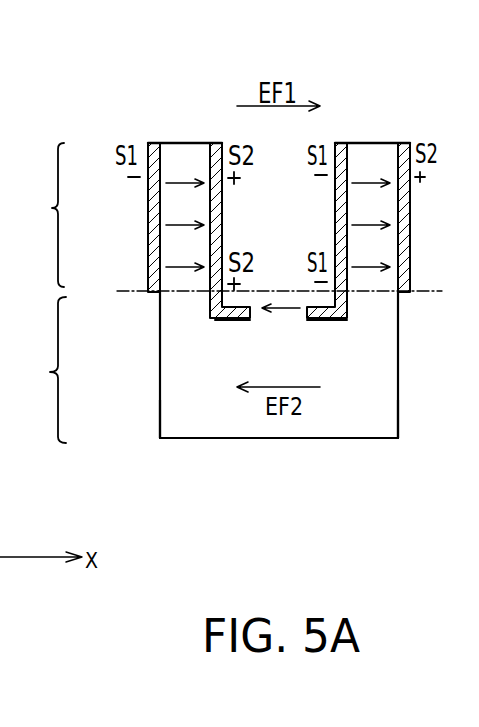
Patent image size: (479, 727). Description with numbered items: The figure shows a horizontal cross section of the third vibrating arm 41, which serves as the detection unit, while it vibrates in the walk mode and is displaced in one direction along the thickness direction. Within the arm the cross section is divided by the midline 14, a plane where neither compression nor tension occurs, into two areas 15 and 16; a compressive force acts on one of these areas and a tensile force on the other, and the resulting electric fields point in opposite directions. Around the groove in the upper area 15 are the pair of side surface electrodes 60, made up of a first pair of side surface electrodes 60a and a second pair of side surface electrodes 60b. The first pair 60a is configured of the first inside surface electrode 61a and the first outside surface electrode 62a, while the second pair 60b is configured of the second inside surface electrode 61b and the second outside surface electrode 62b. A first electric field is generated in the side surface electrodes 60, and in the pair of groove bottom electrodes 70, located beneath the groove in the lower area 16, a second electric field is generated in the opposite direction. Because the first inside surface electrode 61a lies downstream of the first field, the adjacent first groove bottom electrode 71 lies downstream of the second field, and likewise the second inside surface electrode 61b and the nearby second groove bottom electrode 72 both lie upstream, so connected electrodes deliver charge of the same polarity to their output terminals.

The midline 14 is at (427, 290).
The area 15 is at (41, 215).
The area 16 is at (44, 370).
The third vibrating arm 41 is at (308, 457).
The pair of side surface electrodes 60 is at (276, 203).
The first pair of side surface electrodes 60a is at (185, 203).
The second pair of side surface electrodes 60b is at (369, 203).
The first inside surface electrode 61a is at (223, 232).
The second inside surface electrode 61b is at (335, 203).
The first outside surface electrode 62a is at (148, 258).
The second outside surface electrode 62b is at (411, 228).
The pair of groove bottom electrodes 70 is at (237, 320).
The first groove bottom electrode 71 is at (215, 320).
The second groove bottom electrode 72 is at (338, 318).